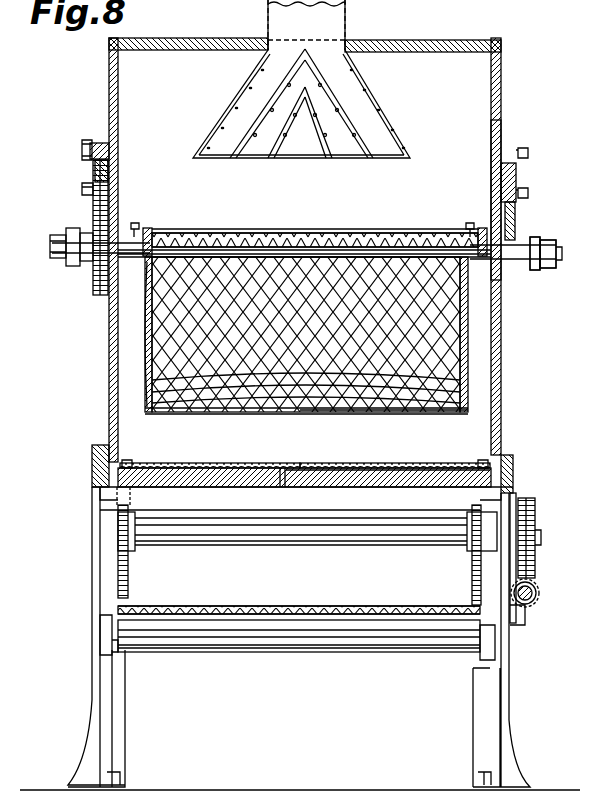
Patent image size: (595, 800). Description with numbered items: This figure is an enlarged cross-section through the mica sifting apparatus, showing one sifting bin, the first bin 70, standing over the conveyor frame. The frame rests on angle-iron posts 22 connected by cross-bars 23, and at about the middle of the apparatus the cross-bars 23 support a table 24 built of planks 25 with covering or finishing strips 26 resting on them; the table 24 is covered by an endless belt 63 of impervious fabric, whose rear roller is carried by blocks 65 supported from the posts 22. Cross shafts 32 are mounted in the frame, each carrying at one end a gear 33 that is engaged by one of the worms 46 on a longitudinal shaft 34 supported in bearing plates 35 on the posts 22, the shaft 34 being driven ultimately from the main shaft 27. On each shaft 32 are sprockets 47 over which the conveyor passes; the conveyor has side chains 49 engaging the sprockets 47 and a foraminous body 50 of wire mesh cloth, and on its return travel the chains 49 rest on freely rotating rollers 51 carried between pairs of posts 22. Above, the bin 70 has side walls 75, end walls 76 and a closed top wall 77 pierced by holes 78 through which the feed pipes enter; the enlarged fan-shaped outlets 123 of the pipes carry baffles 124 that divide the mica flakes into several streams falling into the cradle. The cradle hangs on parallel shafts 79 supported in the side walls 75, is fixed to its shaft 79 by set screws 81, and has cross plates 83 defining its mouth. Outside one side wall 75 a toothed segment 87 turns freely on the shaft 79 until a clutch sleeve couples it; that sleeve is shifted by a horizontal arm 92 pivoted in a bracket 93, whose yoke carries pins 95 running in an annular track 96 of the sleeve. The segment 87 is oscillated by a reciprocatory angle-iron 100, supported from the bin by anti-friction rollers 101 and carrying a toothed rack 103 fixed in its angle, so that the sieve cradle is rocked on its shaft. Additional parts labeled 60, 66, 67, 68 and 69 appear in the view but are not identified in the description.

The posts 22 is at (104, 706).
The cross-bars 23 is at (333, 490).
The table 24 is at (210, 486).
The planks 25 is at (390, 486).
The covering or finishing strips 26 is at (262, 462).
The main shaft 27 is at (92, 498).
The cross shafts 32 is at (292, 542).
The gear 33 is at (536, 516).
The shaft 34 is at (532, 600).
The bearing plates 35 is at (514, 626).
The worms 46 is at (540, 592).
The sprockets 47 is at (128, 578).
The side chains 49 is at (126, 460).
The foraminous body 50 is at (340, 452).
The rollers 51 is at (342, 652).
The drum bottom rim 60 is at (374, 412).
The endless belt 63 is at (282, 482).
The blocks 65 is at (236, 411).
The wire mesh 66 is at (428, 360).
The bracket 67 is at (516, 206).
The drum end flanges 68 is at (143, 323).
The shaft ends 69 is at (86, 262).
The first bin 70 is at (504, 136).
The side walls 75 is at (110, 72).
The end walls 76 is at (355, 64).
The top wall 77 is at (236, 44).
The holes 78 is at (348, 48).
The parallel shafts 79 is at (302, 242).
The set screws 81 is at (148, 232).
The cross plates 83 is at (242, 232).
The toothed segment 87 is at (92, 207).
The horizontal arm 92 is at (68, 232).
The bracket 93 is at (550, 240).
The pins 95 is at (540, 236).
The annular track 96 is at (72, 246).
The reciprocatory angle-irons 100 is at (90, 160).
The anti-friction rollers 101 is at (100, 142).
The toothed rack 103 is at (95, 172).
The outlets 123 is at (240, 88).
The baffles 124 is at (335, 148).